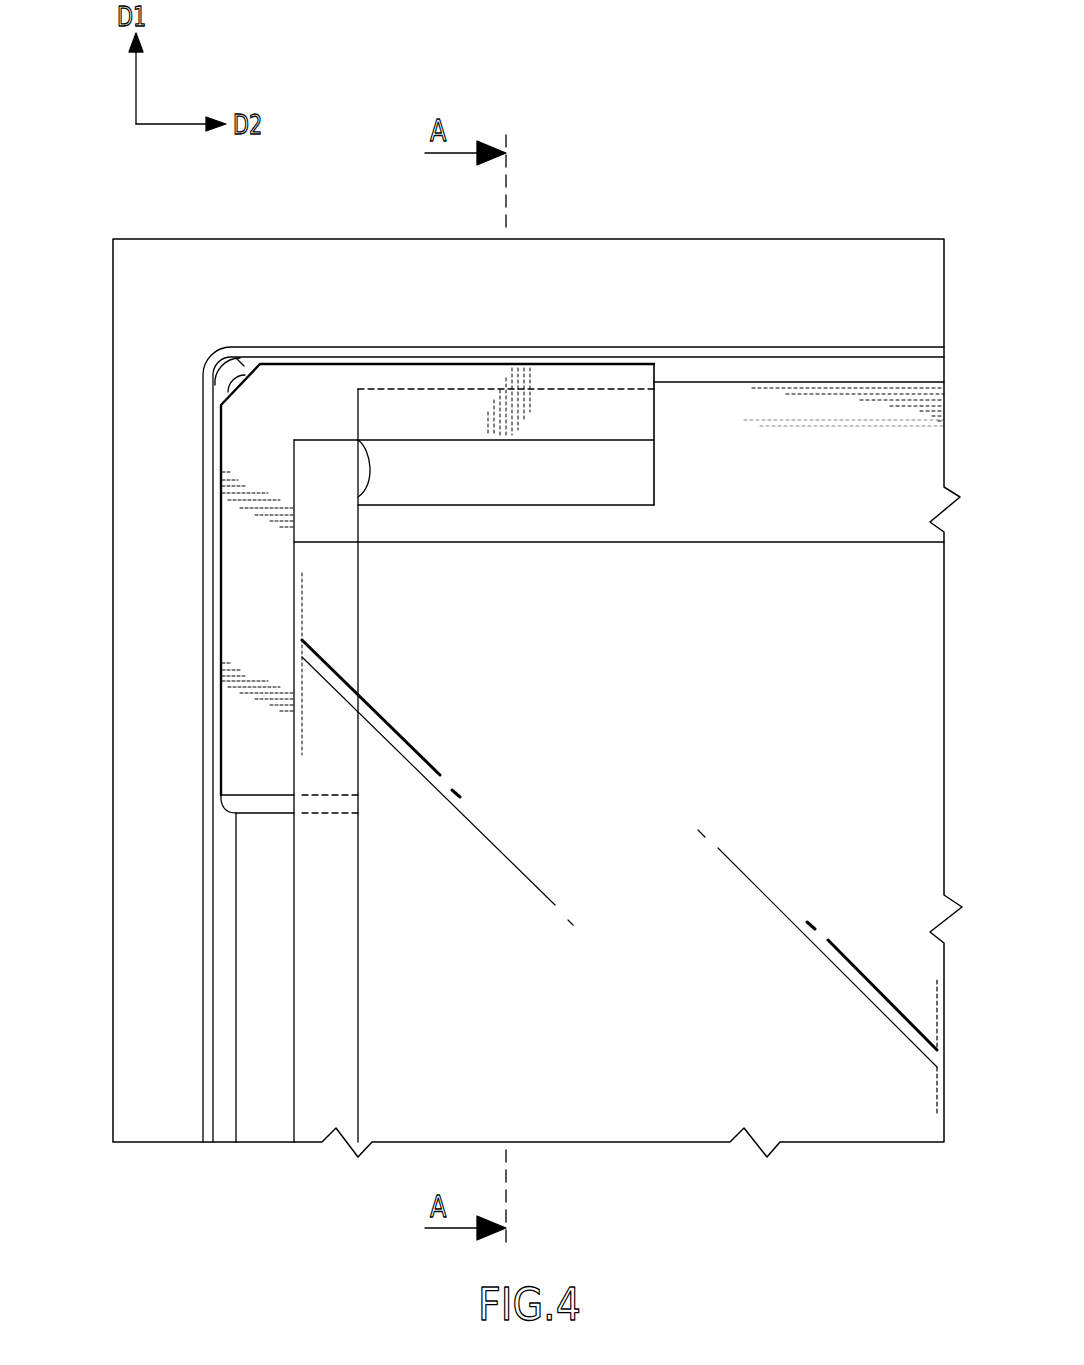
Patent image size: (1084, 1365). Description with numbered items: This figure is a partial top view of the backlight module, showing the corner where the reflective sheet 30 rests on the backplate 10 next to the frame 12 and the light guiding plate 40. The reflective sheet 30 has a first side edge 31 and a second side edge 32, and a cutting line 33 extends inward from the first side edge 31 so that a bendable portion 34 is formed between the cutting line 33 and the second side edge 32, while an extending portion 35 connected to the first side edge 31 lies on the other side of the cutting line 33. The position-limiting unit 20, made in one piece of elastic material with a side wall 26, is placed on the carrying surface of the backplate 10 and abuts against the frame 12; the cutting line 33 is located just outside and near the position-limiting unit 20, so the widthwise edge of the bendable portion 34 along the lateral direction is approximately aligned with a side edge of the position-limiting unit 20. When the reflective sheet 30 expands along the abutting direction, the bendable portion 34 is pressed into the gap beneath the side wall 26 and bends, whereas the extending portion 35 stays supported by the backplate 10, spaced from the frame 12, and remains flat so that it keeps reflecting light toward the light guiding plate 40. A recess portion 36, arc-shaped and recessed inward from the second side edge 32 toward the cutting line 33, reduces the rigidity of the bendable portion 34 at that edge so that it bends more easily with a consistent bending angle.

The backplate 10 is at (145, 228).
The frame 12 is at (581, 283).
The position-limiting unit 20 is at (322, 362).
The side wall 26 is at (630, 412).
The reflective sheet 30 is at (345, 921).
The first side edge 31 is at (733, 382).
The second side edge 32 is at (358, 518).
The cutting line 33 is at (654, 472).
The bendable portion 34 is at (483, 480).
The extending portion 35 is at (842, 417).
The recess portion 36 is at (358, 462).
The light guiding plate 40 is at (282, 1075).